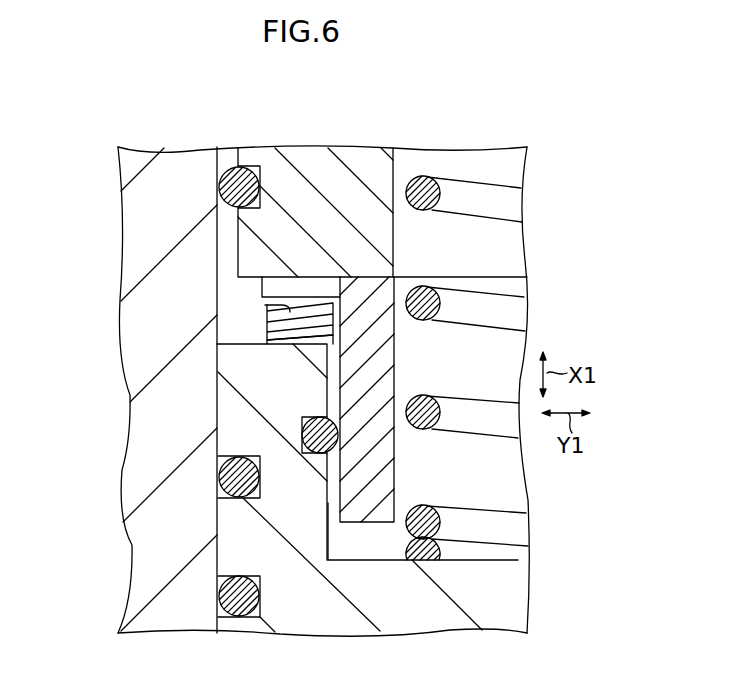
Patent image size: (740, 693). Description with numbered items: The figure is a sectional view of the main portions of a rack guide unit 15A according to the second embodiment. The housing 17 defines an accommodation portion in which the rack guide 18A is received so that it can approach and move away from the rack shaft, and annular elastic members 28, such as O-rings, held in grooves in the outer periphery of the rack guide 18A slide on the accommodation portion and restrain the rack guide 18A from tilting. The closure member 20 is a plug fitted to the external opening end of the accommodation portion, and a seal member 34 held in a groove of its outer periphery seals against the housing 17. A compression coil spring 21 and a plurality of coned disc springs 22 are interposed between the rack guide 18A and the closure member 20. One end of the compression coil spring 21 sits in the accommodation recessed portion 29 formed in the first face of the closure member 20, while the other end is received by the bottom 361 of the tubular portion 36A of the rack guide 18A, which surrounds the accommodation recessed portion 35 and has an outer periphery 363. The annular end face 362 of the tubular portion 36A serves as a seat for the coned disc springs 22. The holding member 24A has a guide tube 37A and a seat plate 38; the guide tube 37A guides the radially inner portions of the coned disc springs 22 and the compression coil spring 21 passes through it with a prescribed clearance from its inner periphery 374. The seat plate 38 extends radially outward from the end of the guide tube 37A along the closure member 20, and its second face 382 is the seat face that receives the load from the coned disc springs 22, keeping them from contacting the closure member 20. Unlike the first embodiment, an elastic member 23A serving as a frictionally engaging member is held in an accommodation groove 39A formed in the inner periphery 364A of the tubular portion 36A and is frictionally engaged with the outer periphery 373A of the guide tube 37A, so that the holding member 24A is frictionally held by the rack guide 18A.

The rack guide unit 15A is at (471, 134).
The housing 17 is at (142, 220).
The rack guide 18A is at (210, 527).
The closure member 20 is at (322, 165).
The compression coil spring 21 is at (421, 192).
The coned disc spring 22 is at (266, 318).
The elastic member 23A is at (337, 430).
The holding member 24A is at (400, 353).
The annular elastic member 28 is at (233, 475).
The accommodation recessed portion 29 is at (508, 243).
The seal member 34 is at (236, 186).
The accommodation recessed portion 35 is at (378, 542).
The tubular portion 36A is at (247, 363).
The bottom 361 is at (463, 560).
The end face 362 is at (266, 334).
The outer periphery 363 is at (220, 387).
The inner periphery 364A is at (330, 542).
The guide tube 37A is at (383, 445).
The inner periphery 374 is at (395, 482).
The outer periphery 373A is at (340, 507).
The second face 382 is at (263, 304).
The seat plate 38 is at (306, 286).
The accommodation groove 39A is at (312, 426).